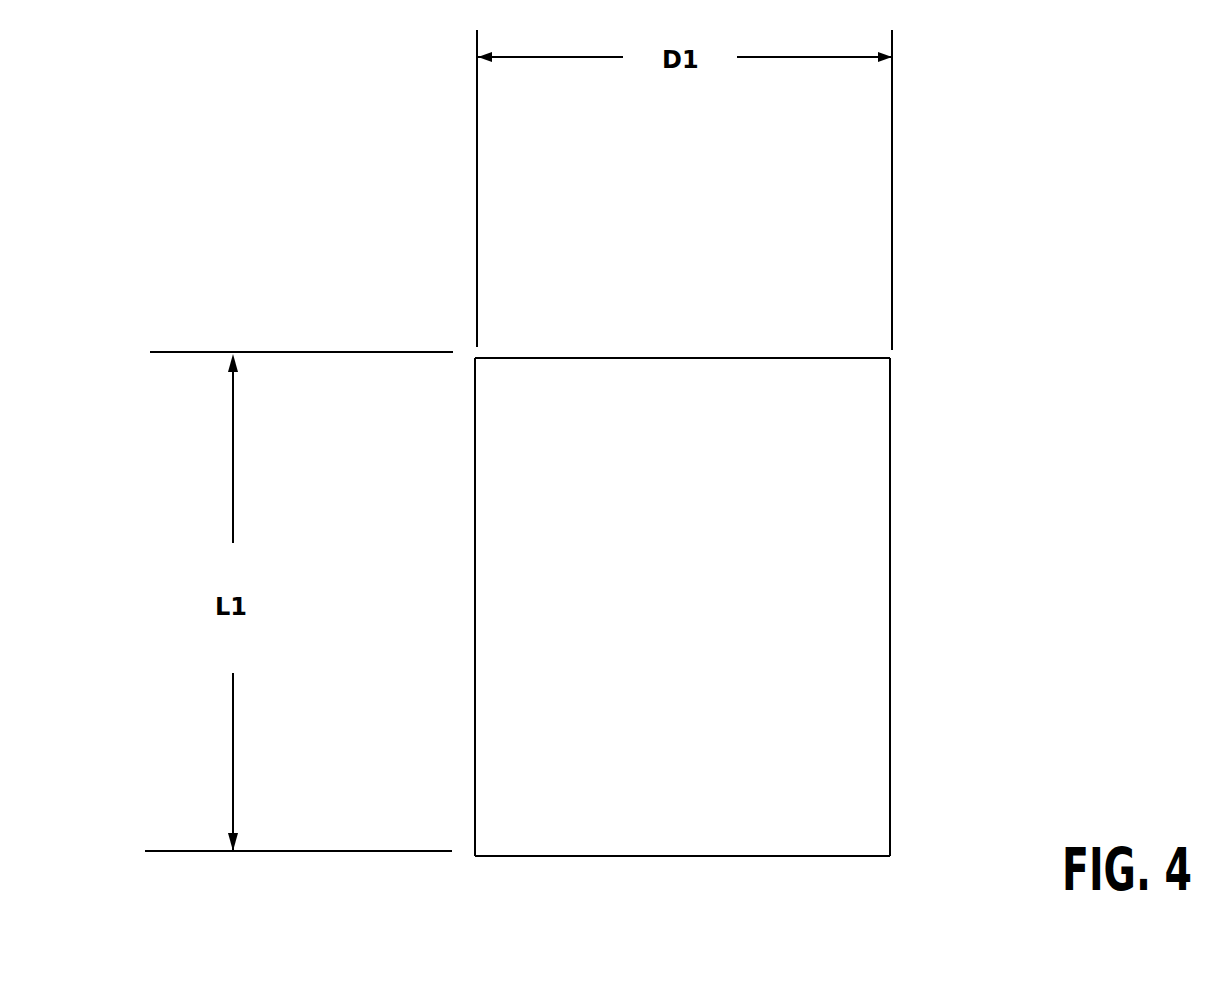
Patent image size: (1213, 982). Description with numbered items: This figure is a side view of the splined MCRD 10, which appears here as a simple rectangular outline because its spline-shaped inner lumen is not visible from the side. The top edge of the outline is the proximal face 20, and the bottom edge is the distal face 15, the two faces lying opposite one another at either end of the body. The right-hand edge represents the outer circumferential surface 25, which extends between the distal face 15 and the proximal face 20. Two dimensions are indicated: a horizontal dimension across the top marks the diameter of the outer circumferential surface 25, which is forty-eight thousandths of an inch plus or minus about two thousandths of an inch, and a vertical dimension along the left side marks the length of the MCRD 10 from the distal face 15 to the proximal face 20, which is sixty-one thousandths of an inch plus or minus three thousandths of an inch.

The MCRD 10 is at (635, 577).
The proximal face 20 is at (596, 357).
The outer circumferential surface 25 is at (891, 463).
The distal face 15 is at (755, 858).